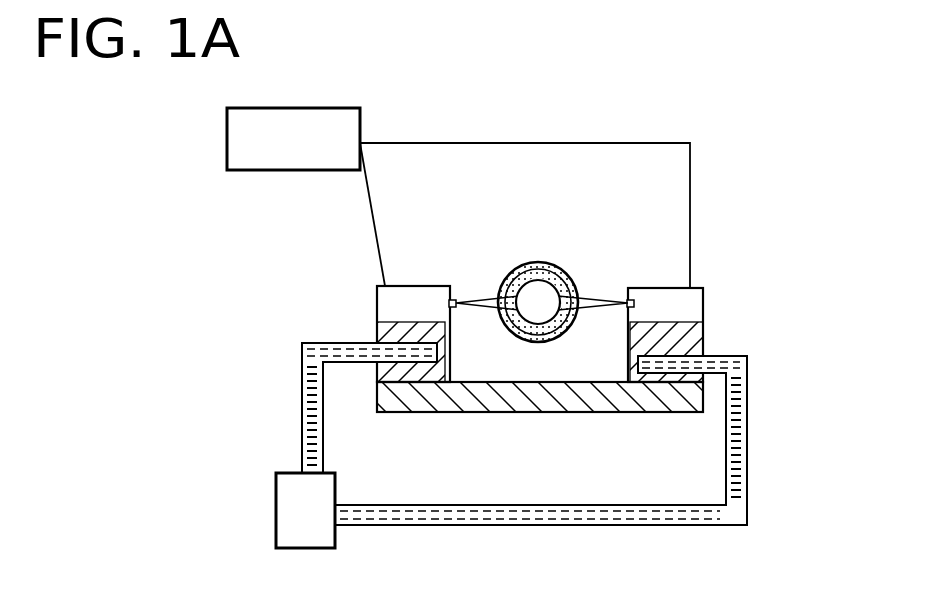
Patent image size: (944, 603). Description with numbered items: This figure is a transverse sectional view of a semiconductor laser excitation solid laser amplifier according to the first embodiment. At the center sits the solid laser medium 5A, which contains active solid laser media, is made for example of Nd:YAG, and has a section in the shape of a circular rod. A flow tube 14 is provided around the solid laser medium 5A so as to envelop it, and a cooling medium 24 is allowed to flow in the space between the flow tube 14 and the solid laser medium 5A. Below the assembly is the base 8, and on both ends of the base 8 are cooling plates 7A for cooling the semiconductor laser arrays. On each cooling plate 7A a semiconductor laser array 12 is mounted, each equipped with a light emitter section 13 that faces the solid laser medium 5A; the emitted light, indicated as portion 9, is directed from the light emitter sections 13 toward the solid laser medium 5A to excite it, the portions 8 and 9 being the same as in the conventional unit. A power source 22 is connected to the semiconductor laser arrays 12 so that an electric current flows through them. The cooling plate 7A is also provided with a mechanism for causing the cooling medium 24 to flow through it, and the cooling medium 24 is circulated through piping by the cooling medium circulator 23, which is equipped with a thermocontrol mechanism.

The solid laser medium 5A is at (537, 302).
The cooling plate 7A is at (387, 335).
The base 8 is at (545, 395).
The excitation light 9 is at (496, 290).
The semiconductor laser array 12 is at (408, 300).
The light emitter section 13 is at (457, 298).
The flow tube 14 is at (567, 277).
The power source 22 is at (285, 172).
The cooling medium circulator 23 is at (292, 498).
The cooling medium 24 is at (521, 338).